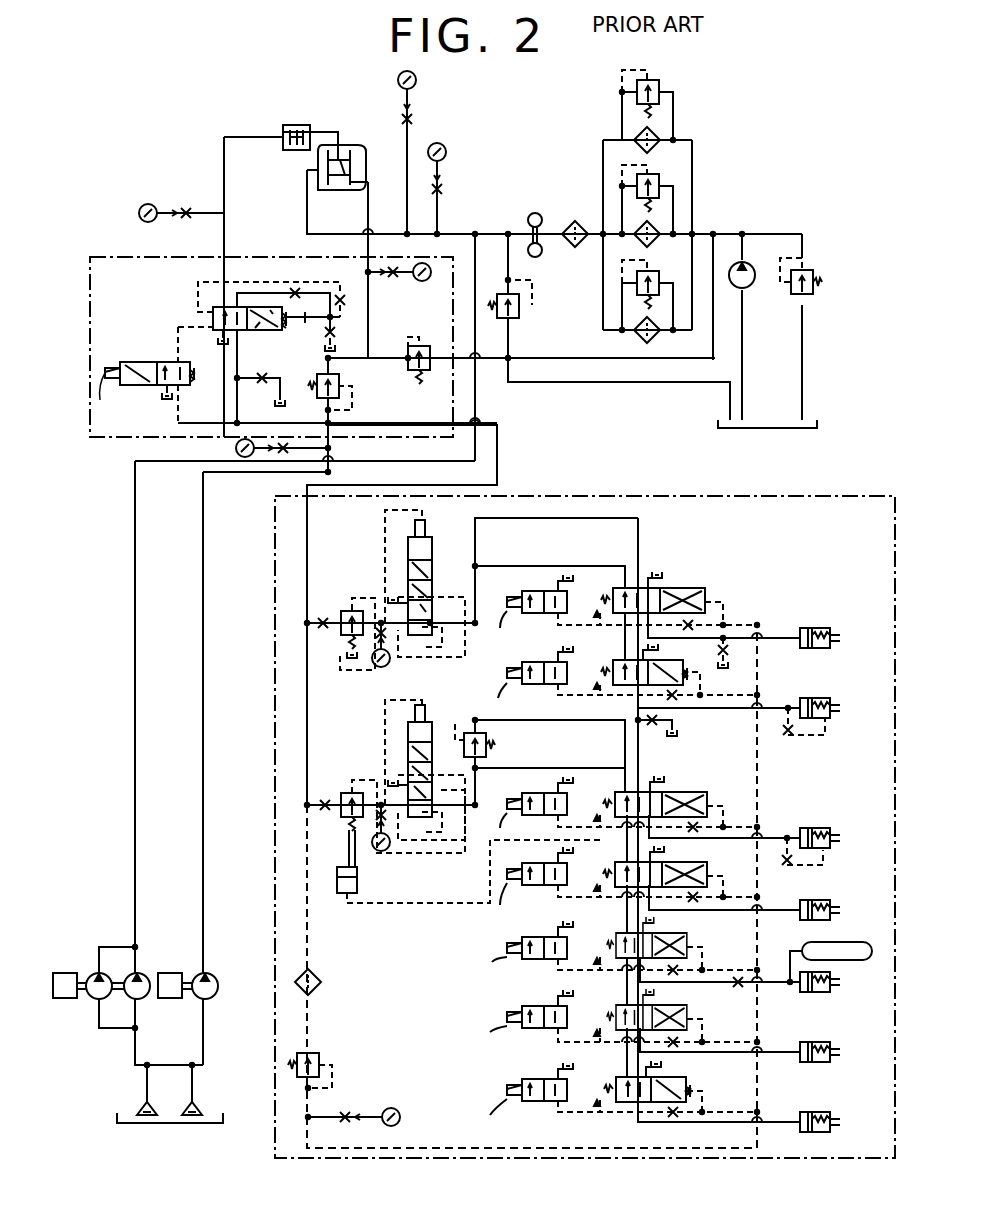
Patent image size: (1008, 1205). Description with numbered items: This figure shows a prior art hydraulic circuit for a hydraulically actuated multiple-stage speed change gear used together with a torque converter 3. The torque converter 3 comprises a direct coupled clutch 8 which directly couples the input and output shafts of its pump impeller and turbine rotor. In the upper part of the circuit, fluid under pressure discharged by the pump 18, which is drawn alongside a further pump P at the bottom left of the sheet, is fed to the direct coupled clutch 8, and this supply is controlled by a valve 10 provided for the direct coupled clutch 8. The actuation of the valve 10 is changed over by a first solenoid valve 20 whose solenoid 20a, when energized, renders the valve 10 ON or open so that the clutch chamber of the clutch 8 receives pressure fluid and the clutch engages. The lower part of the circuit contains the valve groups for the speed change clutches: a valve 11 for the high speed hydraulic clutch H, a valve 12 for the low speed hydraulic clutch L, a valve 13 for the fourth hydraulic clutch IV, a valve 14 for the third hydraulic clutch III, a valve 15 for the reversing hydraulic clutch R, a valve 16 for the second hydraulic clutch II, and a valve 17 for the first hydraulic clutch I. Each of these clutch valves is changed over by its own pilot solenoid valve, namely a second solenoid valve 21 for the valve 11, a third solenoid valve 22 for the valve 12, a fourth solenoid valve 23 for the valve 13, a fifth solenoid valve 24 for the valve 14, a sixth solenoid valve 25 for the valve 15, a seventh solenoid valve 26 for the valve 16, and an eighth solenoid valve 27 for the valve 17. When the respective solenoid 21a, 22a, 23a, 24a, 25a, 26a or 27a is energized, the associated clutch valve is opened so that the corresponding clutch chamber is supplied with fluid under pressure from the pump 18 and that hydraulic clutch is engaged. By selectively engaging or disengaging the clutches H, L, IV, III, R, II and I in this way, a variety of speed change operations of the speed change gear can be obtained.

The torque converter 3 is at (360, 185).
The clutch 8 is at (300, 124).
The valve for use with the direct coupled clutch 10 is at (213, 318).
The pump 18 is at (215, 975).
The first solenoid valve 20 is at (148, 362).
The solenoid 20a is at (120, 402).
The main hydraulic pump P is at (143, 975).
The valve for use with the high speed clutch 11 is at (705, 600).
The valve for use with the low speed clutch 12 is at (682, 672).
The valve for use with the fourth clutch 13 is at (707, 804).
The valve for use with the third clutch 14 is at (707, 874).
The valve for use with the reversing clutch 15 is at (687, 945).
The valve for use with the second clutch 16 is at (687, 1017).
The valve for use with the first clutch 17 is at (687, 1089).
The second solenoid valve 21 is at (567, 604).
The solenoid 21a is at (506, 632).
The third solenoid valve 22 is at (567, 675).
The solenoid 22a is at (486, 698).
The fourth solenoid valve 23 is at (567, 806).
The solenoid 23a is at (488, 828).
The fifth solenoid valve 24 is at (567, 876).
The solenoid 24a is at (512, 907).
The sixth solenoid valve 25 is at (567, 950).
The solenoid 25a is at (477, 962).
The seventh solenoid valve 26 is at (567, 1019).
The solenoid 26a is at (474, 1032).
The eighth solenoid valve 27 is at (567, 1091).
The solenoid 27a is at (472, 1116).
The high speed hydraulic clutch H is at (820, 628).
The low speed hydraulic clutch L is at (822, 698).
The fourth hydraulic clutch IV is at (820, 828).
The third hydraulic clutch III is at (834, 893).
The reversing hydraulic clutch R is at (820, 992).
The second hydraulic clutch II is at (822, 1062).
The first hydraulic clutch I is at (830, 1116).